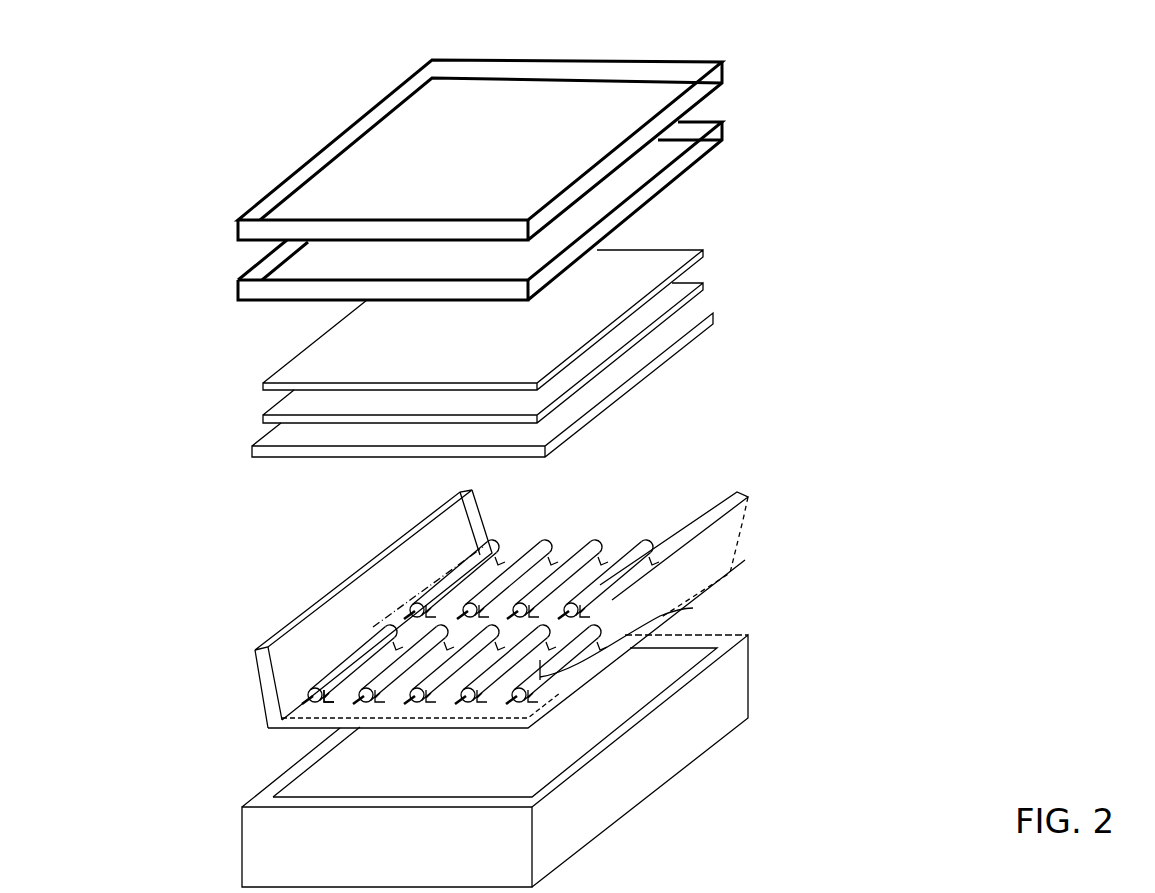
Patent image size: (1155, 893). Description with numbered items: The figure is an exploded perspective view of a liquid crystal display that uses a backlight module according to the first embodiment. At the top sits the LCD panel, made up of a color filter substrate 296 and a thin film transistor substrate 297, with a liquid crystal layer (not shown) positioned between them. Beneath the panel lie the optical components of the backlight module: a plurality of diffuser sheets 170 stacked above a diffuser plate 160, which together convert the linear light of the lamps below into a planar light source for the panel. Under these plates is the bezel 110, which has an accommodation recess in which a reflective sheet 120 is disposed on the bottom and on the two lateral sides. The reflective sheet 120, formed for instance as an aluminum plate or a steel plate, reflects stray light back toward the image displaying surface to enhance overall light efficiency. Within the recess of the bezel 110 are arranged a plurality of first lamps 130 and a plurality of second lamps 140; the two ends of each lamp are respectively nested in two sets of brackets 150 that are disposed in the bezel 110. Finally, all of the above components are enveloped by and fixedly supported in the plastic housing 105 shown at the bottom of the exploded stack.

The color filter substrate 296 is at (722, 70).
The thin film transistor substrate 297 is at (722, 130).
The diffuser sheets 170 is at (703, 252).
The diffuser plate 160 is at (713, 313).
The first lamps 130 is at (340, 637).
The second lamps 140 is at (445, 572).
The brackets 150 is at (520, 552).
The bezel 110 is at (727, 553).
The reflective sheet 120 is at (693, 608).
The plastic housing 105 is at (733, 700).